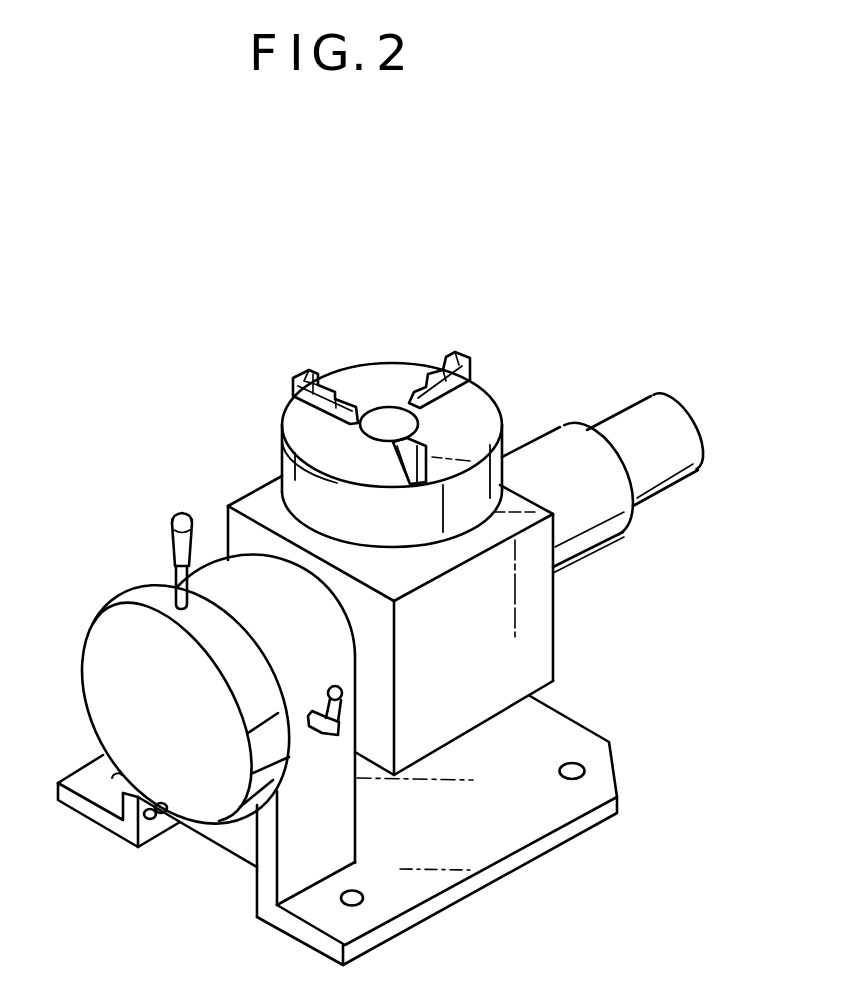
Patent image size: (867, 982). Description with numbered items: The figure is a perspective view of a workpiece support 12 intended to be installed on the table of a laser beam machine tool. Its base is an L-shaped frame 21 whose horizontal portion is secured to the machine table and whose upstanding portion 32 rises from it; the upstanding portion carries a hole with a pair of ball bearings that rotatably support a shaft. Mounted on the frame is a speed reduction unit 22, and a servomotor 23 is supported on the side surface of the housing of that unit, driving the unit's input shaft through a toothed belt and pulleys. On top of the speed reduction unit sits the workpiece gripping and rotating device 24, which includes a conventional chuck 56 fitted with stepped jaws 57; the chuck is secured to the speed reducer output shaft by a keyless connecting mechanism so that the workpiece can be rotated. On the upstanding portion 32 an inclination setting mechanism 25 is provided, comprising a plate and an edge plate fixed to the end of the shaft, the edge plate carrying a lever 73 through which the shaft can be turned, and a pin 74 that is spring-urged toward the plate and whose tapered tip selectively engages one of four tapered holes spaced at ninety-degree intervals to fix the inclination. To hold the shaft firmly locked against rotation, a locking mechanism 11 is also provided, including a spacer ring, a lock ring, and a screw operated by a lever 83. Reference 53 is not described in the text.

The locking mechanism 11 is at (314, 701).
The workpiece support 12 is at (211, 459).
The frame 21 is at (464, 902).
The speed reduction unit 22 is at (556, 594).
The servomotor 23 is at (532, 441).
The workpiece gripping and rotating device 24 is at (341, 364).
The inclination setting mechanism 25 is at (88, 714).
The upstanding portion 32 is at (254, 843).
The housing flange 53 is at (556, 678).
The chuck 56 is at (282, 462).
The stepped jaws 57 is at (306, 367).
The lever 73 is at (170, 553).
The pin 74 is at (151, 826).
The lever 83 is at (320, 739).